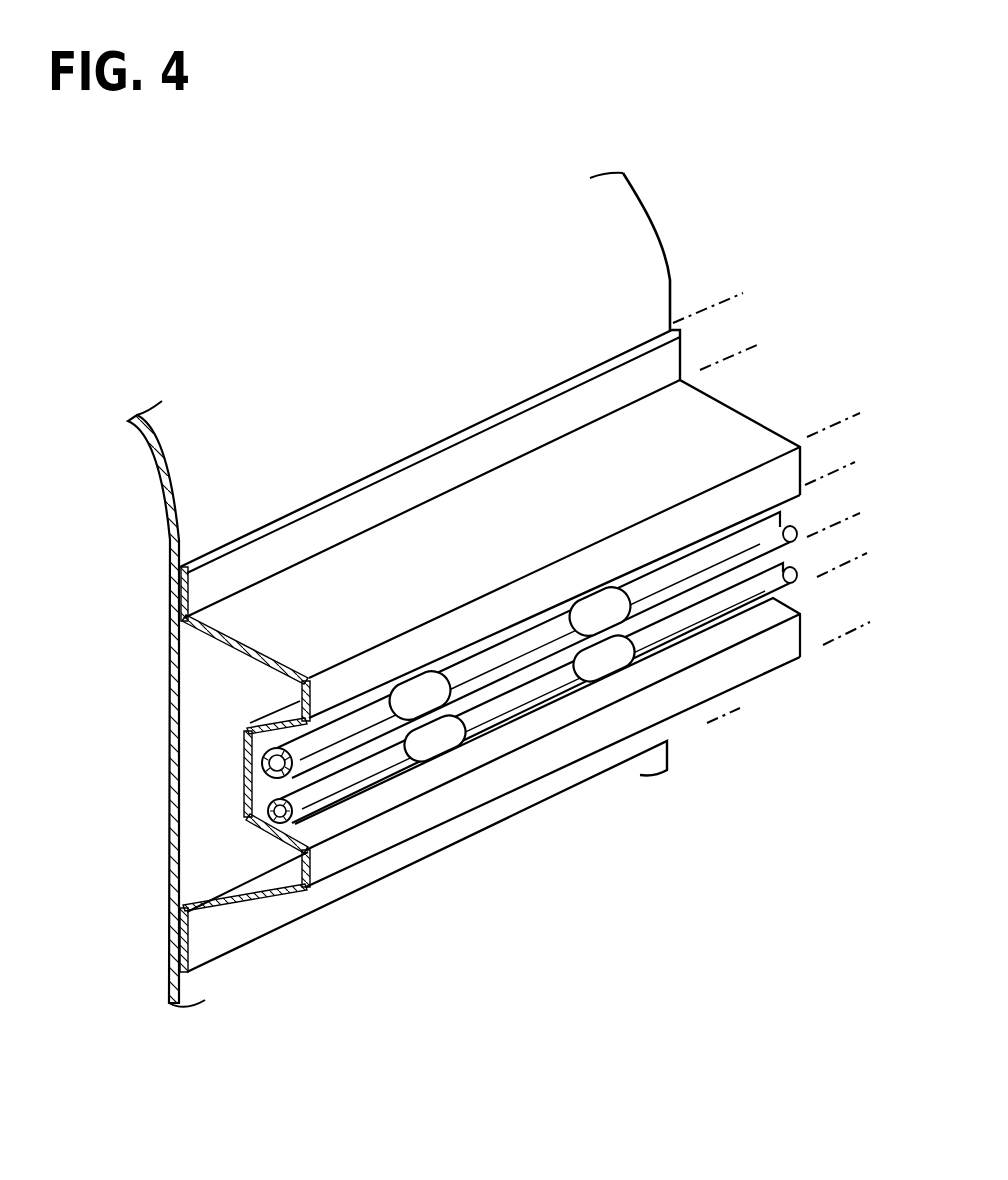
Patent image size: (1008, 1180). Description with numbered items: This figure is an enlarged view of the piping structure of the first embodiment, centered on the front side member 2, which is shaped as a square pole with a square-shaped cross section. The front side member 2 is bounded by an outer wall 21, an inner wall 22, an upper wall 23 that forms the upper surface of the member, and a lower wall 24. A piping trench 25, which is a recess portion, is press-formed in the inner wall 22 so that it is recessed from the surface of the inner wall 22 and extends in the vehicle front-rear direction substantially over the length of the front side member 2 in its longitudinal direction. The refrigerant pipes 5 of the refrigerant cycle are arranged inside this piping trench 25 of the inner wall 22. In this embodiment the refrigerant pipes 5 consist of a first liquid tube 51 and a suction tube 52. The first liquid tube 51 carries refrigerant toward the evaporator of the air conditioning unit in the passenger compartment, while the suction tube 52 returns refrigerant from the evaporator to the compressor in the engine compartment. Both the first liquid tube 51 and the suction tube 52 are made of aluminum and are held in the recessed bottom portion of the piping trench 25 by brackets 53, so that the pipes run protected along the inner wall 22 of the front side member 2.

The front side member 2 is at (688, 408).
The refrigerant pipes 5 is at (549, 602).
The outer wall 21 is at (195, 793).
The inner wall 22 is at (377, 843).
The upper wall 23 is at (253, 637).
The lower wall 24 is at (260, 893).
The piping trench 25 is at (262, 800).
The first liquid tube 51 is at (527, 698).
The suction tube 52 is at (740, 540).
The brackets 53 is at (613, 668).